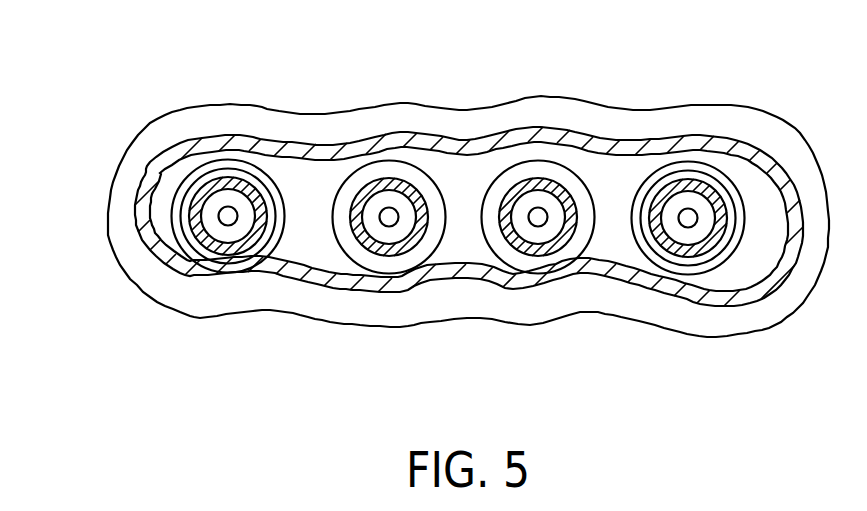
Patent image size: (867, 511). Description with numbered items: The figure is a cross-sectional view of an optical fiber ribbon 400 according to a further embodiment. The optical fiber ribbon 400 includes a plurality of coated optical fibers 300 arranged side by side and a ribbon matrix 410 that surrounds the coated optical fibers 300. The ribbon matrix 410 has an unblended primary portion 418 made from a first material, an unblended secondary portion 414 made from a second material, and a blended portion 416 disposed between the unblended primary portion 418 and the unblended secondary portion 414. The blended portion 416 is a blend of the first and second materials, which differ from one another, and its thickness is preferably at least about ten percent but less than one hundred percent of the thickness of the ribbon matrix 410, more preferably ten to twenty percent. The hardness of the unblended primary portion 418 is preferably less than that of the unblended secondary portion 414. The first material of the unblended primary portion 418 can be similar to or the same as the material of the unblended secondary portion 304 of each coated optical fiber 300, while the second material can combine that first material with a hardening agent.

The coated optical fiber 300 is at (231, 160).
The unblended secondary portion of coated optical fiber 304 is at (180, 213).
The optical fiber ribbon 400 is at (470, 345).
The ribbon matrix 410 is at (698, 108).
The unblended secondary portion 414 is at (617, 122).
The blended portion 416 is at (433, 141).
The unblended primary portion 418 is at (310, 162).